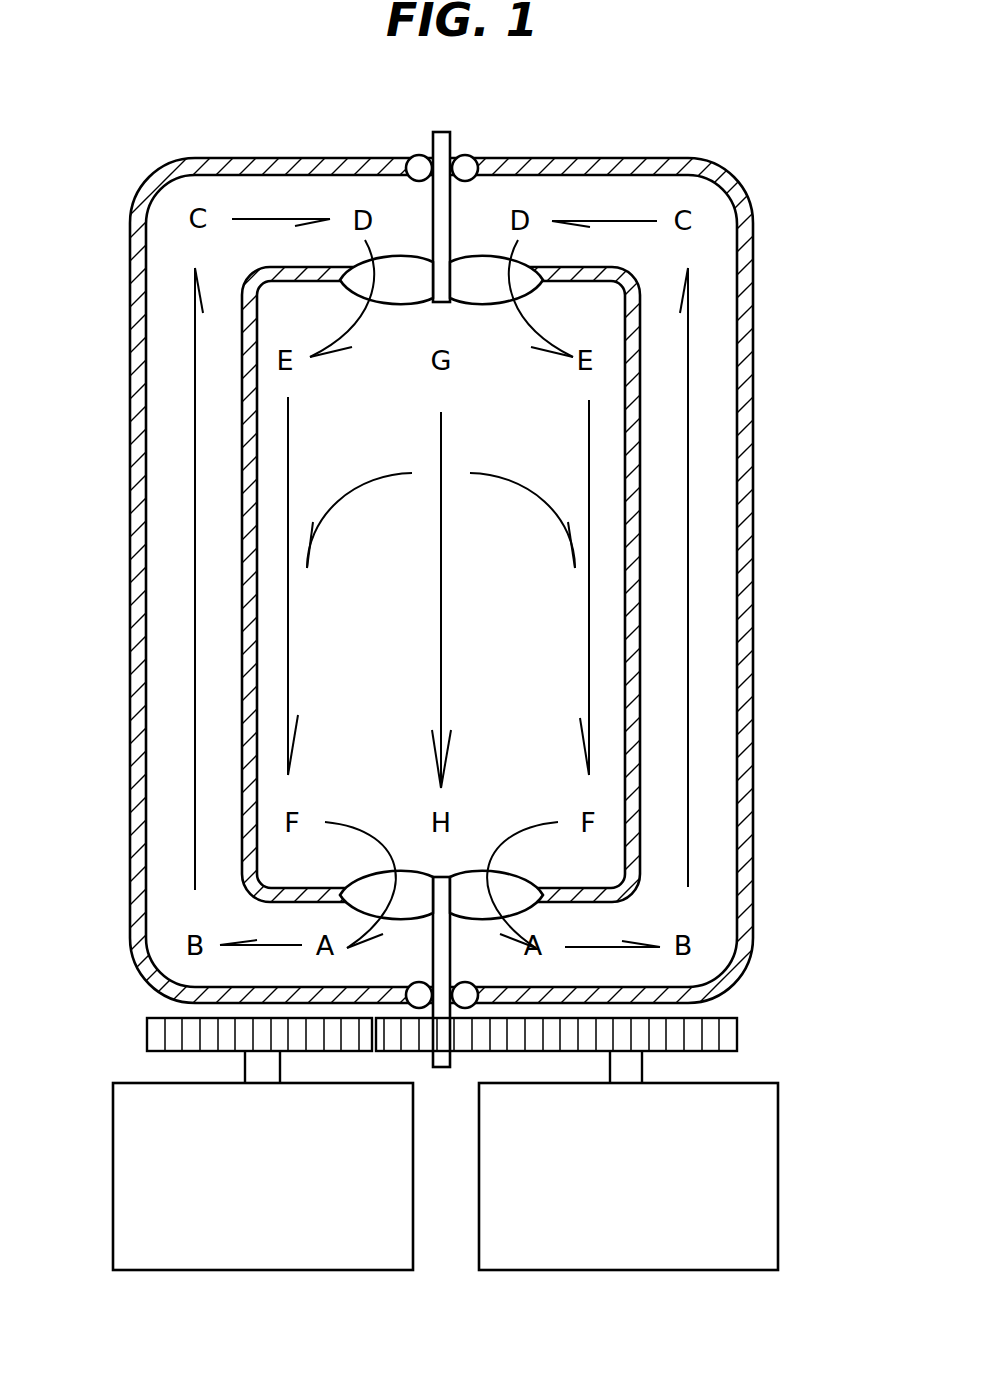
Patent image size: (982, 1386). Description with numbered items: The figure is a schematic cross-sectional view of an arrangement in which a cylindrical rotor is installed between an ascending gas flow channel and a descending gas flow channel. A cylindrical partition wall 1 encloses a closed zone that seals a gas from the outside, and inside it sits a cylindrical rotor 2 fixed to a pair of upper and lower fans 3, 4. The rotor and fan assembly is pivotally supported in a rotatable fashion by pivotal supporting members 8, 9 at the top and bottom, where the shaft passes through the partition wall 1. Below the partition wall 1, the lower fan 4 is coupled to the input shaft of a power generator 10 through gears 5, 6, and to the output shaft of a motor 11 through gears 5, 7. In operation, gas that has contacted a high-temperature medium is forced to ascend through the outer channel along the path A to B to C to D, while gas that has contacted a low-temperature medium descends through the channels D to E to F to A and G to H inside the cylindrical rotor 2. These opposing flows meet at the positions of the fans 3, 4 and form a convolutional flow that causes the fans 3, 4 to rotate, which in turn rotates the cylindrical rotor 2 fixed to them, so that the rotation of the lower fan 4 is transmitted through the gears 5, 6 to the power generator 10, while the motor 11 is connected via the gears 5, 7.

The cylindrical partition wall 1 is at (746, 327).
The cylindrical rotor 2 is at (632, 507).
The upper fan 3 is at (523, 270).
The lower fan 4 is at (517, 887).
The gear 5 is at (466, 1045).
The gear 6 is at (176, 1034).
The gear 7 is at (705, 1034).
The pivotal supporting member 8 is at (462, 170).
The pivotal supporting member 9 is at (465, 993).
The power generator 10 is at (268, 1256).
The motor 11 is at (740, 1191).